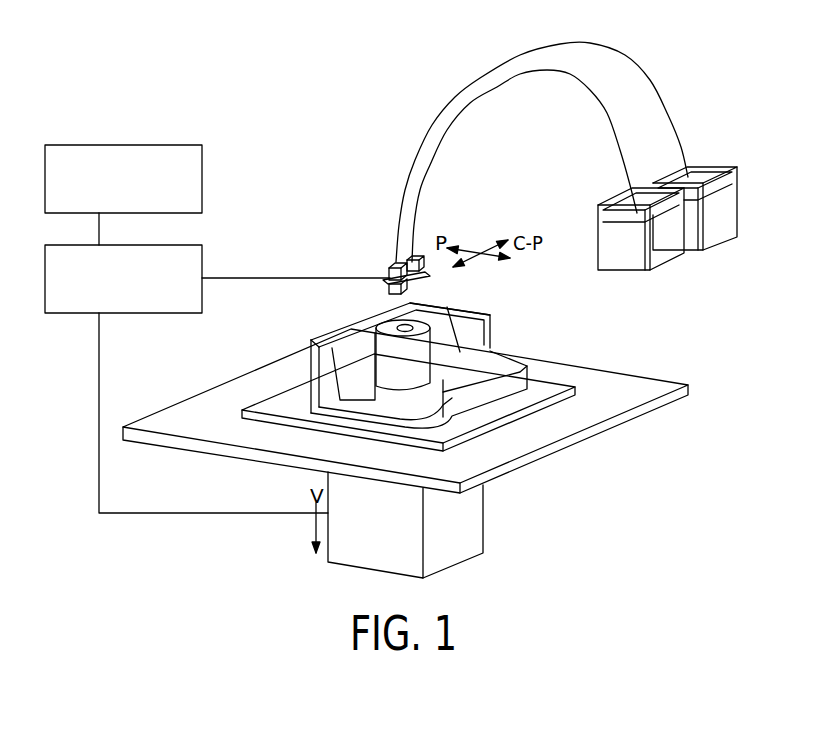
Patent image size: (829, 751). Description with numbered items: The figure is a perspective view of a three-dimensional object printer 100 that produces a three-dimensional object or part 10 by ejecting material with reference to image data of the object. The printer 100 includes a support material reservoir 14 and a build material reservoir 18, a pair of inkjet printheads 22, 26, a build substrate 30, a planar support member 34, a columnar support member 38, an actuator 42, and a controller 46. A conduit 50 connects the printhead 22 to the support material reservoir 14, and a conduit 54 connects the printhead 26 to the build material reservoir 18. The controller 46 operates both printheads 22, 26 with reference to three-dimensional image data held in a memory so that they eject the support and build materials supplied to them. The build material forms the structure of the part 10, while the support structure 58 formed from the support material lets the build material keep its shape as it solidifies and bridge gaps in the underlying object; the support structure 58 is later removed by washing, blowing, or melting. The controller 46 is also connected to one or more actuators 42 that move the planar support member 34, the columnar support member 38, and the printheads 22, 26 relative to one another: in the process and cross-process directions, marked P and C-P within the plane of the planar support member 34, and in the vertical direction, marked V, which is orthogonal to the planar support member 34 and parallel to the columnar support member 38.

The printer 100 is at (338, 117).
The three-dimensional object or part 10 is at (482, 370).
The support material reservoir 14 is at (664, 254).
The build material reservoir 18 is at (712, 240).
The inkjet printhead 22 is at (411, 290).
The inkjet printhead 26 is at (433, 287).
The build substrate 30 is at (492, 416).
The planar support member 34 is at (540, 468).
The columnar support member 38 is at (476, 542).
The actuator 42 is at (204, 257).
The controller 46 is at (203, 180).
The conduit 50 is at (614, 141).
The conduit 54 is at (648, 87).
The support structure 58 is at (478, 342).